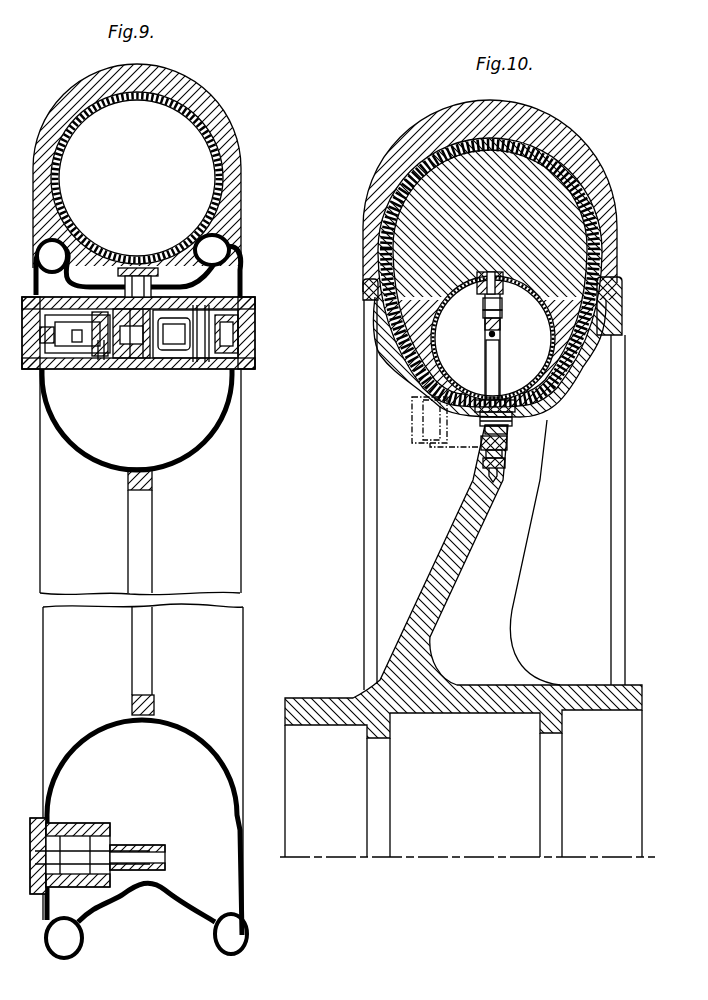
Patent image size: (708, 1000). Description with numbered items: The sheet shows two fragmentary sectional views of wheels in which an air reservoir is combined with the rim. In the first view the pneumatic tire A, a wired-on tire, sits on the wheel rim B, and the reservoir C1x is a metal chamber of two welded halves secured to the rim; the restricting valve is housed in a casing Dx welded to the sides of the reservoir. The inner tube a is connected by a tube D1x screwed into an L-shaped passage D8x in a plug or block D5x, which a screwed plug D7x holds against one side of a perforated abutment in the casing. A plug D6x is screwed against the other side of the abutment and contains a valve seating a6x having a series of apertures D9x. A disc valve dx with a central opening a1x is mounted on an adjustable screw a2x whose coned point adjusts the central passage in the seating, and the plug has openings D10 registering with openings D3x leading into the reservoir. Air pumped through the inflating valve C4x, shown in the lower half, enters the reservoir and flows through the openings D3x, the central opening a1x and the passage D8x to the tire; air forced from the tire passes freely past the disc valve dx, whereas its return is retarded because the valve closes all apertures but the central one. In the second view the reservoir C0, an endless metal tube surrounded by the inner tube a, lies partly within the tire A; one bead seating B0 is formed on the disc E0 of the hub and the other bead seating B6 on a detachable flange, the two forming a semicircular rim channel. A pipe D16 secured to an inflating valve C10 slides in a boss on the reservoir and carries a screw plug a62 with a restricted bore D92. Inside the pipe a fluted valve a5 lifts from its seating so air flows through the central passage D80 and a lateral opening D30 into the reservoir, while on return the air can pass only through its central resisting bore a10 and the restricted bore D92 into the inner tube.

In FIG. 9, the pneumatic tire A is at (192, 117).
In FIG. 10, the pneumatic tire A is at (385, 160).
In FIG. 9, the inner tube a is at (207, 128).
In FIG. 10, the inner tube a is at (440, 152).
In FIG. 9, the wheel rim B is at (234, 258).
In FIG. 9, the reservoir C1x is at (243, 403).
In FIG. 9, the casing Dx is at (241, 371).
In FIG. 9, the valve seating a6x is at (135, 315).
In FIG. 9, the apertures D9x is at (135, 309).
In FIG. 9, the disc valve dx is at (118, 318).
In FIG. 9, the openings D3x is at (100, 320).
In FIG. 9, the plug D6x is at (95, 312).
In FIG. 9, the openings D10 is at (37, 370).
In FIG. 9, the adjustable screw a2x is at (92, 372).
In FIG. 9, the central opening a1x is at (100, 368).
In FIG. 9, the tube D1x is at (160, 312).
In FIG. 9, the screwed plug D7x is at (213, 339).
In FIG. 9, the plug or block D5x is at (147, 370).
In FIG. 9, the L-shaped passage D8x is at (173, 370).
In FIG. 9, the inflating valve C4x is at (85, 868).
In FIG. 10, the bead seating B0 is at (557, 367).
In FIG. 10, the bead seating B6 is at (381, 322).
In FIG. 10, the wheel disc E0 is at (428, 629).
In FIG. 10, the reservoir C0 is at (513, 281).
In FIG. 10, the screw plug a62 is at (477, 280).
In FIG. 10, the restricted bore D92 is at (498, 277).
In FIG. 10, the central resisting bore a10 is at (487, 304).
In FIG. 10, the fluted valve a5 is at (499, 299).
In FIG. 10, the central passage D80 is at (487, 321).
In FIG. 10, the lateral opening D30 is at (497, 334).
In FIG. 10, the pipe D16 is at (490, 353).
In FIG. 10, the inflating valve C10 is at (508, 442).